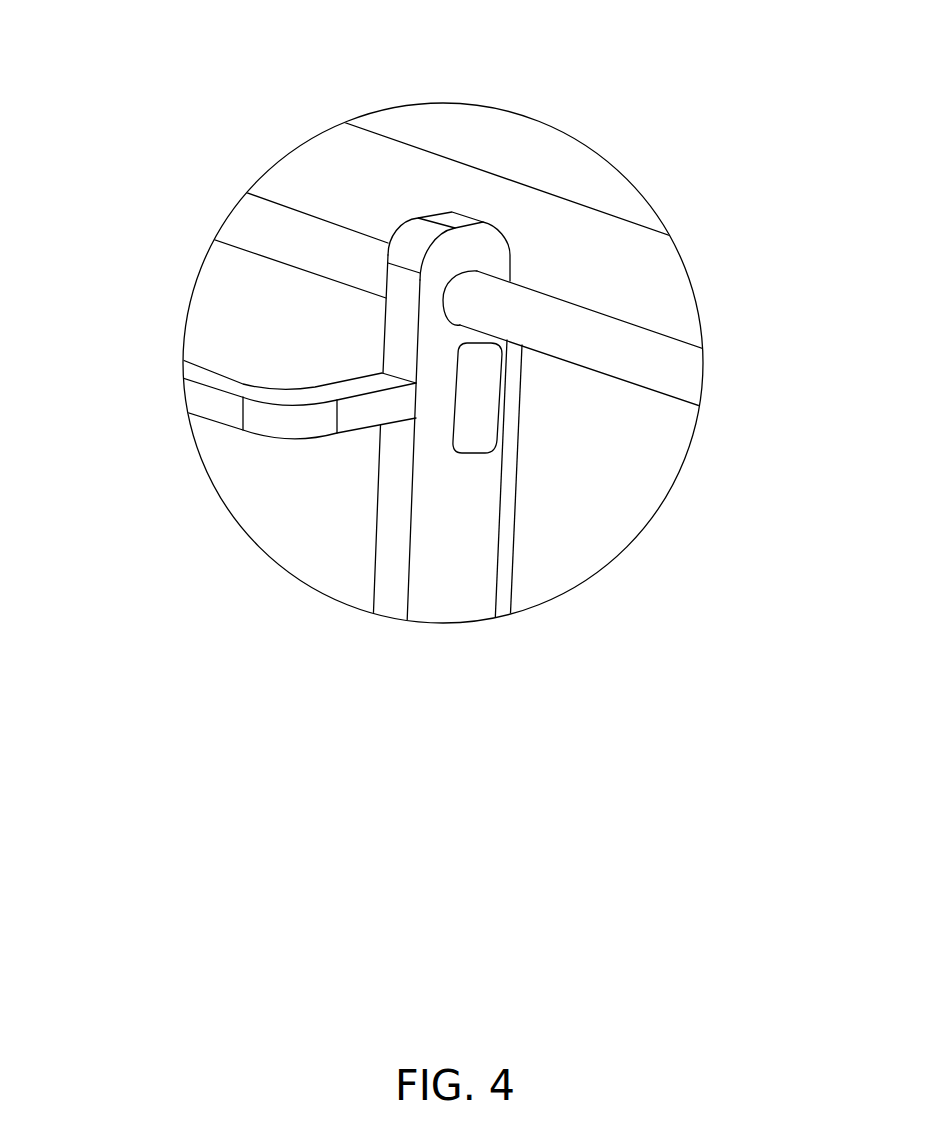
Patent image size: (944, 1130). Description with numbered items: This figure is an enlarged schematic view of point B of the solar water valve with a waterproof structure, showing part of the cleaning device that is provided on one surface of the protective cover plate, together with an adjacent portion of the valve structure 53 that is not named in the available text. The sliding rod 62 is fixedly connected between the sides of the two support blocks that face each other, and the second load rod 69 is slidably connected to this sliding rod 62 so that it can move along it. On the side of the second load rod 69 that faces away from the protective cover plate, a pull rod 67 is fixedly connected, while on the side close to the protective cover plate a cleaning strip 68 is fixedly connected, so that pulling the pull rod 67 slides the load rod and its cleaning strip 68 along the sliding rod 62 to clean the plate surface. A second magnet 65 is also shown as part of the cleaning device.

The point B is at (190, 295).
The frame panel 53 is at (367, 182).
The sliding rod 62 is at (582, 340).
The second magnet 65 is at (481, 387).
The pull rod 67 is at (220, 402).
The cleaning strip 68 is at (507, 520).
The second load rod 69 is at (453, 537).